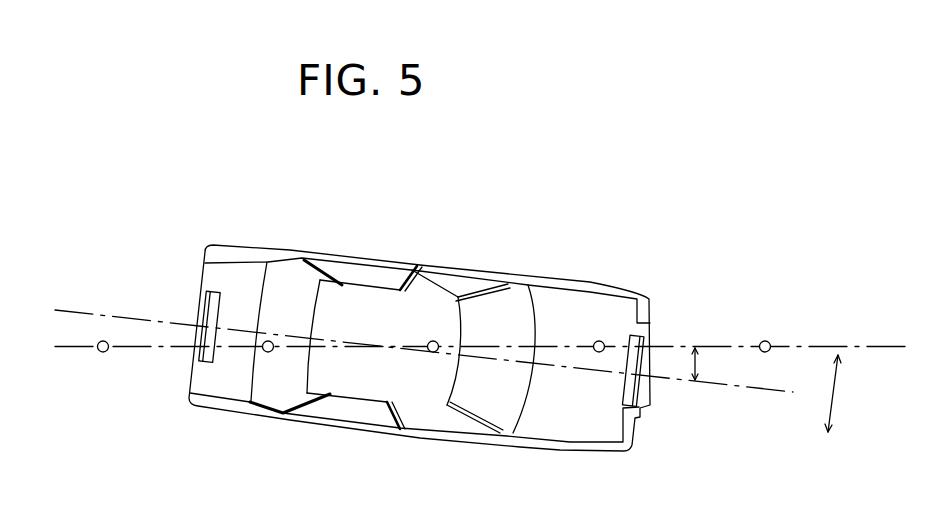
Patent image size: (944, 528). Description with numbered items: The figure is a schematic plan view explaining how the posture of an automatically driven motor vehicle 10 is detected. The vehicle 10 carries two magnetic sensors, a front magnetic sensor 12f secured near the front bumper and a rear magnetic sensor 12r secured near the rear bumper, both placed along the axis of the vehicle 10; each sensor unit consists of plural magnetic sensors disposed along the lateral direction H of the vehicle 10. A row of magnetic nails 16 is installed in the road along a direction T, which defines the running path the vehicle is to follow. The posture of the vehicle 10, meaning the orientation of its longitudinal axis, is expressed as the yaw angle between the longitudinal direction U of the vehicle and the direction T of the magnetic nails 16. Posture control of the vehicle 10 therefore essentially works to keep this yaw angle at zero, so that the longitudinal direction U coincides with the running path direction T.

The motor vehicle 10 is at (394, 261).
The rear magnetic sensor 12r is at (209, 292).
The front magnetic sensor 12f is at (640, 407).
The magnetic nails 16 is at (103, 352).
The direction of magnetic nail installation T is at (793, 345).
The longitudinal direction of the vehicle U is at (763, 386).
The lateral direction of the vehicle H is at (839, 393).